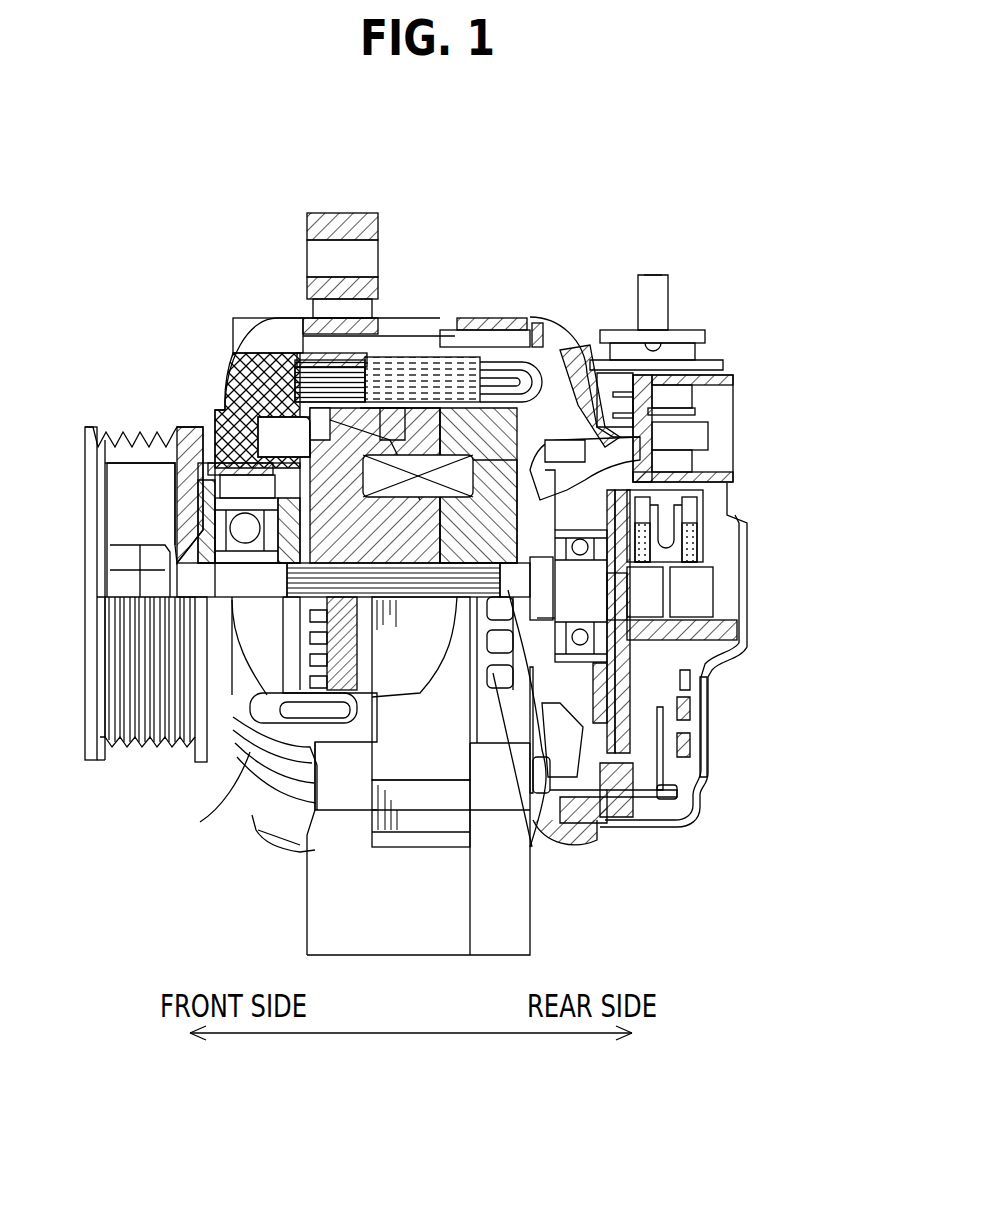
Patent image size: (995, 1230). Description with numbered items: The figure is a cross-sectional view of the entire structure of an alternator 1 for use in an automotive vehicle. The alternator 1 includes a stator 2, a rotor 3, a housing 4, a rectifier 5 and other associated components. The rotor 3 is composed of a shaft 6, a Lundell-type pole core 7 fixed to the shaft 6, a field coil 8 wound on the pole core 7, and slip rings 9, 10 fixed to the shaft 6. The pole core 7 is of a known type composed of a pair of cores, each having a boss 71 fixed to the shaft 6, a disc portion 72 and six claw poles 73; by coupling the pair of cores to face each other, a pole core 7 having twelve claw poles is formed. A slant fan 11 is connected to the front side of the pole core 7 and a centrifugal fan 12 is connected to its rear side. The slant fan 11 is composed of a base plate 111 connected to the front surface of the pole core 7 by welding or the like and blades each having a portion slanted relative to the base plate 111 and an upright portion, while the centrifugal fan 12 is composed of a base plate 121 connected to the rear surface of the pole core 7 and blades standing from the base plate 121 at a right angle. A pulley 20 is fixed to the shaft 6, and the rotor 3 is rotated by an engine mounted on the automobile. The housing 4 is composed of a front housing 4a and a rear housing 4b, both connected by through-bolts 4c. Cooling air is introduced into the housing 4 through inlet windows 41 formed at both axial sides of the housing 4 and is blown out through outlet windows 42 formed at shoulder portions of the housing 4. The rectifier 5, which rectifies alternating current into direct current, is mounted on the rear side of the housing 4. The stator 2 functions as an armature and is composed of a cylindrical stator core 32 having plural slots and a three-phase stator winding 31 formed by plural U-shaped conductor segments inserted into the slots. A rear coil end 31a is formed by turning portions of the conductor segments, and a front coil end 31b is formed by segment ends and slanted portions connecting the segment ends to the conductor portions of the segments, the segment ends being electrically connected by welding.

The alternator 1 is at (563, 251).
The stator 2 is at (520, 386).
The rotor 3 is at (362, 470).
The housing 4 is at (304, 870).
The front housing 4a is at (324, 325).
The rear housing 4b is at (506, 318).
The through-bolts 4c is at (373, 300).
The rectifier 5 is at (680, 712).
The shaft 6 is at (100, 472).
The Lundell-type pole core 7 is at (555, 440).
The field coil 8 is at (435, 452).
The slip ring 9 is at (645, 597).
The slip ring 10 is at (697, 637).
The slant fan 11 is at (235, 447).
The centrifugal fan 12 is at (600, 460).
The pulley 20 is at (200, 583).
The stator winding 31 is at (458, 378).
The rear coil end 31a is at (494, 368).
The front coil end 31b is at (325, 386).
The stator core 32 is at (422, 395).
The inlet windows 41 is at (215, 500).
The outlet windows 42 is at (240, 793).
The boss 71 is at (660, 494).
The disc portion 72 is at (300, 435).
The claw poles 73 is at (395, 430).
The base plate 111 is at (240, 490).
The base plate 121 is at (650, 515).